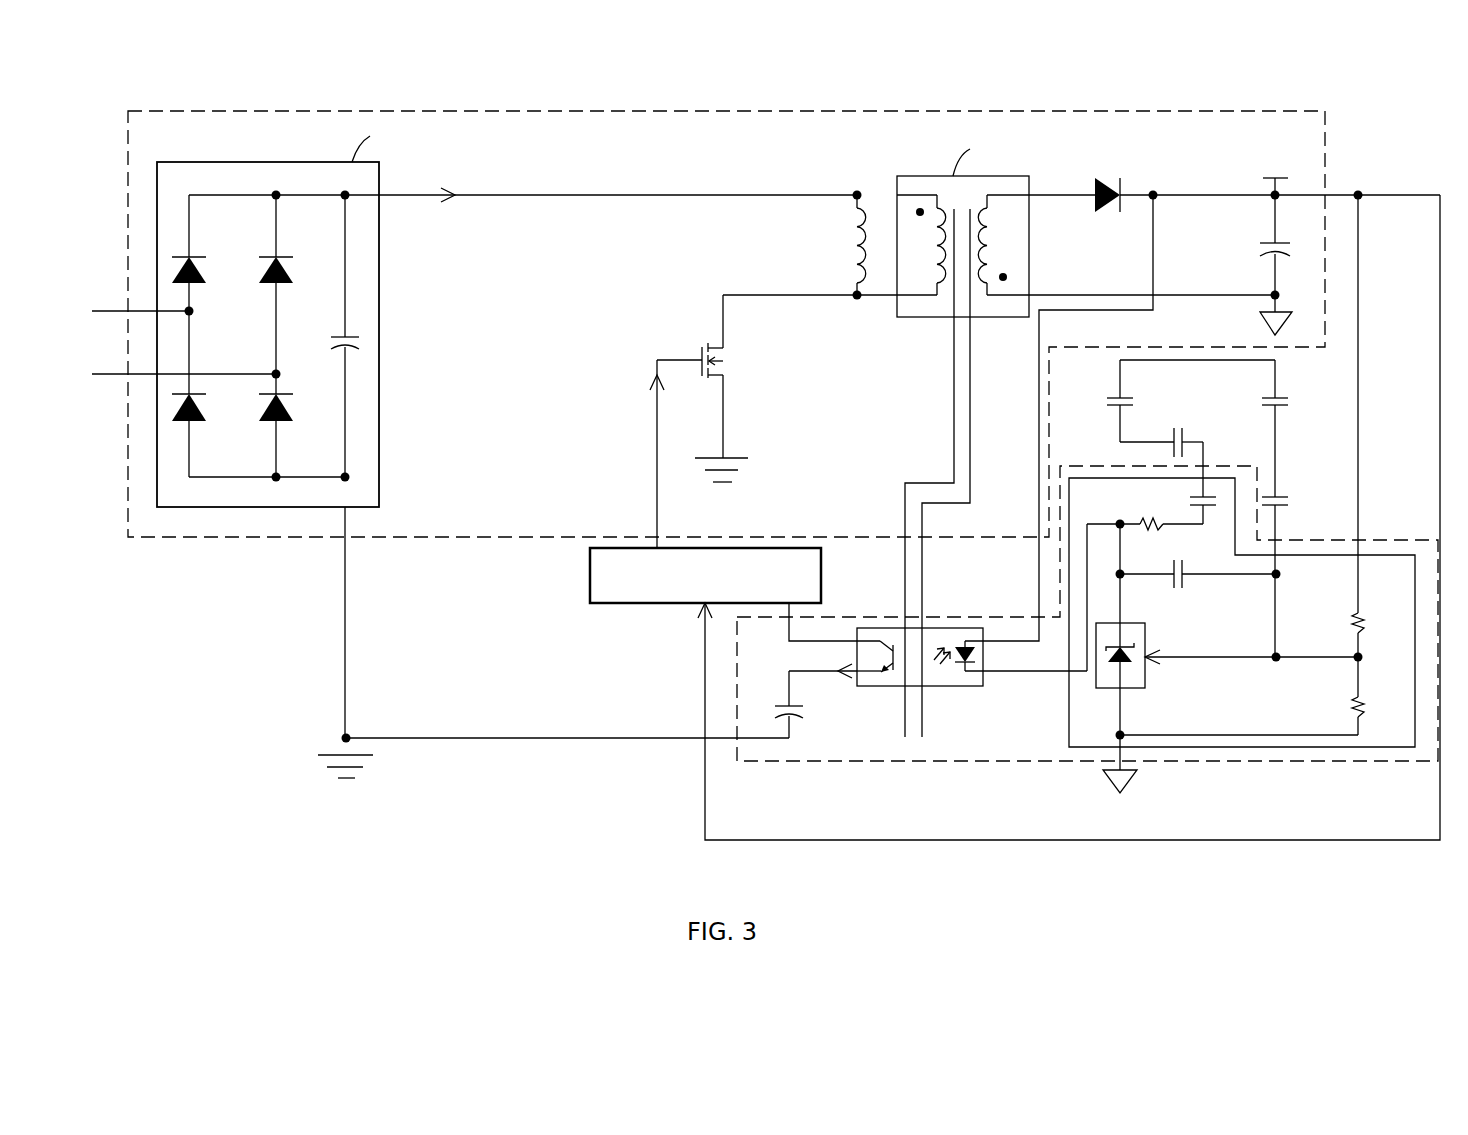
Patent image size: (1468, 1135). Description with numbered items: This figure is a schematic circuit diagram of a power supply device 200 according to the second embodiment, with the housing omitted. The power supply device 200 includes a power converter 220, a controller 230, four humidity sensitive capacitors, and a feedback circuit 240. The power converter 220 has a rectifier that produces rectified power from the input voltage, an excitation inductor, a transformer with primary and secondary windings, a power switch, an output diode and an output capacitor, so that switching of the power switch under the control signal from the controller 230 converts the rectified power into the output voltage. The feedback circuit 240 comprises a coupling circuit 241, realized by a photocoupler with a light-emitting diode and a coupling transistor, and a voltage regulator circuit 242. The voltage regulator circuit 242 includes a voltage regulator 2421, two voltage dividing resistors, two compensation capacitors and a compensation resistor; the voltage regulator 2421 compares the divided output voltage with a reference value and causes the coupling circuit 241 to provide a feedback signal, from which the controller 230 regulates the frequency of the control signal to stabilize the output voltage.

The power supply device 200 is at (1454, 898).
The power converter 220 is at (1258, 111).
The controller 230 is at (821, 577).
The feedback circuit 240 is at (872, 762).
The coupling circuit 241 is at (872, 687).
The voltage regulator circuit 242 is at (1068, 727).
The voltage regulator 2421 is at (1145, 676).